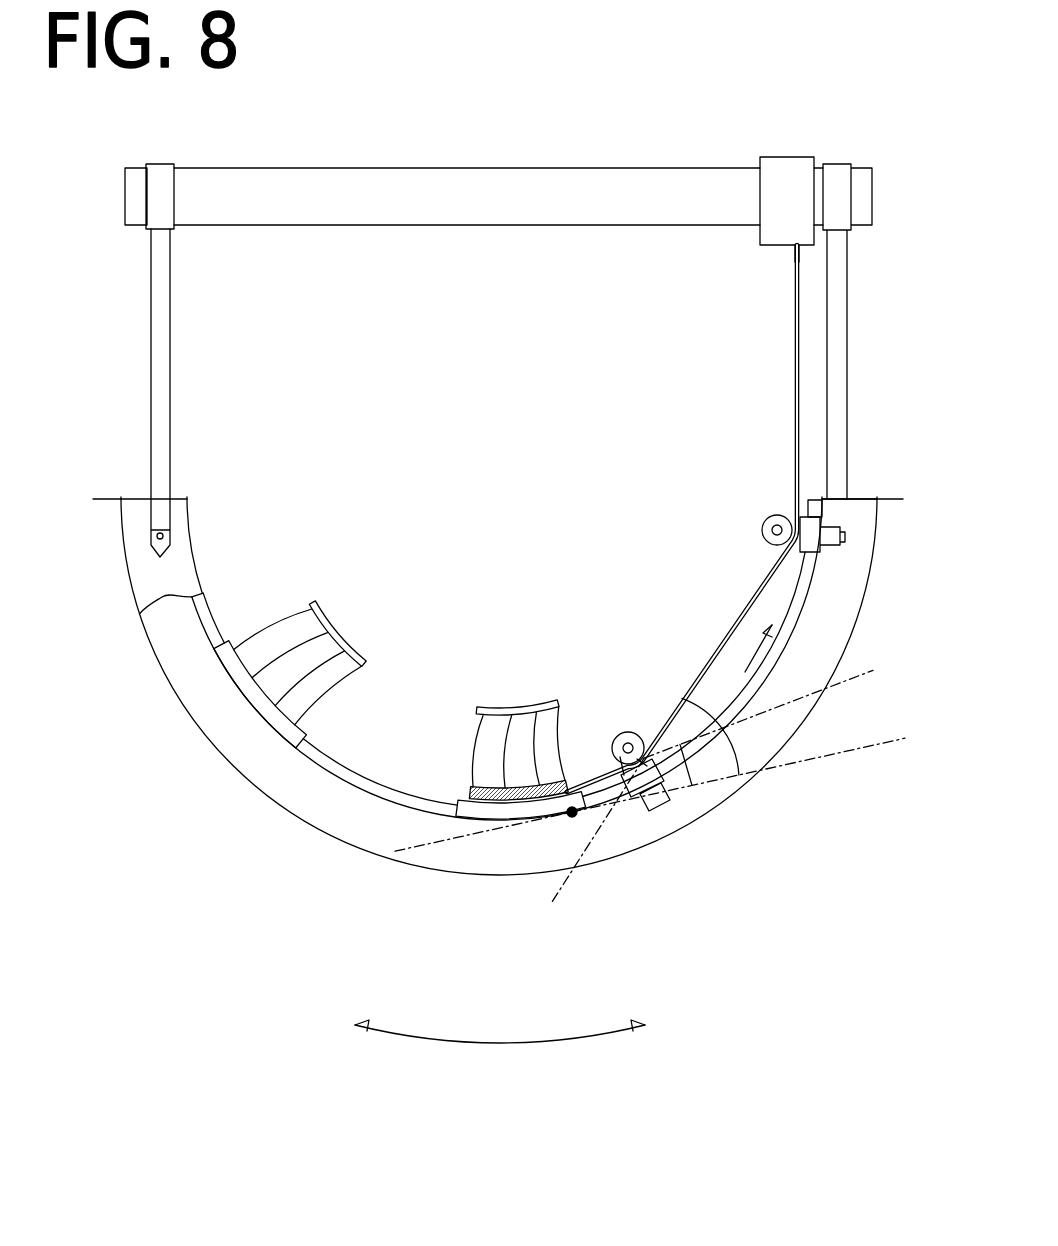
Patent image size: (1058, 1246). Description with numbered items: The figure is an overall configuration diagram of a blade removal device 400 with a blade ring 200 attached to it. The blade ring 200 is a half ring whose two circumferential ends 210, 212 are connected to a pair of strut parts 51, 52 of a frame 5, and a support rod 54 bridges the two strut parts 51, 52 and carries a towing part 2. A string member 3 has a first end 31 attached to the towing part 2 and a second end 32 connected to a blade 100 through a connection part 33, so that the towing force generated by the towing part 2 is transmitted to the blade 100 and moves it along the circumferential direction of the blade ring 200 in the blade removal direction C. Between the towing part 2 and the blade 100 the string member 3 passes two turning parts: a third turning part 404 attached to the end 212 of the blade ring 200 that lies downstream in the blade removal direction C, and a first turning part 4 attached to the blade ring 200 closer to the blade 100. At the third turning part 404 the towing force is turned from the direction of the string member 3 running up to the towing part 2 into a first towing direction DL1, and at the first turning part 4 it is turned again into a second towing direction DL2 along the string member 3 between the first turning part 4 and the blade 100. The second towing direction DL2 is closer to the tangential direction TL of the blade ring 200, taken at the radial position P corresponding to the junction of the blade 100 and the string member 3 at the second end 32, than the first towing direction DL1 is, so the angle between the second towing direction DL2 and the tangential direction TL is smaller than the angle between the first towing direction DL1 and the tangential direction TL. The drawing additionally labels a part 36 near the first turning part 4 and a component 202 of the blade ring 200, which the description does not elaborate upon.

The blade removal device 400 is at (675, 141).
The towing part 2 is at (789, 157).
The string member 3 is at (796, 356).
The first turning part 4 is at (627, 731).
The frame 5 is at (391, 168).
The first end 31 is at (798, 247).
The second end 32 is at (572, 785).
The connection part 33 is at (470, 792).
The attachment member 36 is at (605, 772).
The strut part 51 is at (151, 338).
The strut part 52 is at (848, 340).
The support rod 54 is at (300, 168).
The blade 100 is at (308, 612).
The blade ring 200 is at (481, 858).
The guide rail 202 is at (357, 782).
The end 210 is at (187, 498).
The end 212 is at (810, 500).
The third turning part 404 is at (761, 530).
The radial position P is at (569, 829).
The tangential direction TL is at (667, 790).
The first towing direction DL1 is at (585, 848).
The second towing direction DL2 is at (782, 703).
The blade removal direction C is at (755, 648).